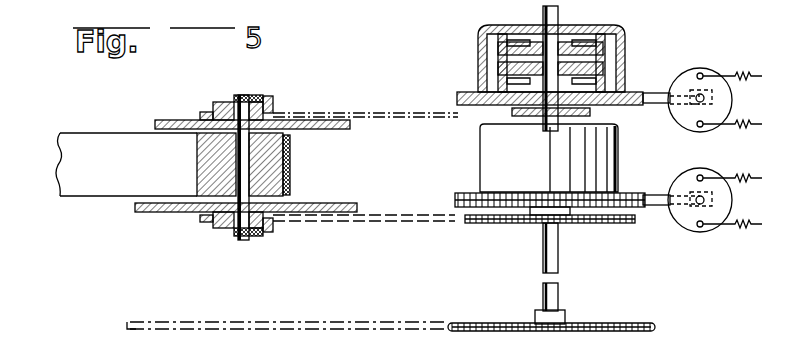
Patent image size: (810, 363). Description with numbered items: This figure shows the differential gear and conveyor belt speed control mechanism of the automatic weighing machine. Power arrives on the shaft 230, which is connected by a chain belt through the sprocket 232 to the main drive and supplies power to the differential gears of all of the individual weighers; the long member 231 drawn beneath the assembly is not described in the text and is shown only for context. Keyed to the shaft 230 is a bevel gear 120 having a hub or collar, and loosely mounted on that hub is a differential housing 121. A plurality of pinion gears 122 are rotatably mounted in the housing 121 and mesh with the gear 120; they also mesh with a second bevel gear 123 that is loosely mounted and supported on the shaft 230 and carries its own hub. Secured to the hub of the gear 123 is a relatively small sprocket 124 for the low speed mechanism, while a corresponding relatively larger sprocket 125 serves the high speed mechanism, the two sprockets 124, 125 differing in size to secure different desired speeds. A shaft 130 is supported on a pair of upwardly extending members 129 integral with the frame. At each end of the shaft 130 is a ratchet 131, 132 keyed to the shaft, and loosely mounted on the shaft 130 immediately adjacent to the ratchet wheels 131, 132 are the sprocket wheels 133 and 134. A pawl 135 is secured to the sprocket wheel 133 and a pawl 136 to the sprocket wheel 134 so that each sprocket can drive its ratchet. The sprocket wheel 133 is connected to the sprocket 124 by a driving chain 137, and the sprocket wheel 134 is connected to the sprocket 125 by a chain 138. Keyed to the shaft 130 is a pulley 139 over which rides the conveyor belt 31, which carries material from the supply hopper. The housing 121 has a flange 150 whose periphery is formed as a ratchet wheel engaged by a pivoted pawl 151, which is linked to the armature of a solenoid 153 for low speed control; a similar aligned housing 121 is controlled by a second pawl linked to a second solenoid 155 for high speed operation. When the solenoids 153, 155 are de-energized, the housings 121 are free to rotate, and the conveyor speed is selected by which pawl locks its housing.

The conveyor belt 31 is at (99, 145).
The bevel gear 120 is at (560, 18).
The differential housing 121 is at (620, 42).
The pinion gears 122 is at (528, 16).
The second bevel gear 123 is at (590, 70).
The sprocket 124 is at (590, 117).
The sprocket 125 is at (624, 223).
The upwardly extending members 129 is at (167, 106).
The shaft 130 is at (238, 146).
The ratchet 131 is at (237, 95).
The ratchet 132 is at (242, 236).
The sprocket wheel 133 is at (211, 109).
The sprocket wheel 134 is at (218, 224).
The pawl 135 is at (266, 96).
The pawl 136 is at (267, 236).
The driving chain 137 is at (360, 89).
The chain 138 is at (455, 208).
The pulley 139 is at (206, 180).
The flange 150 is at (642, 94).
The pawl 151 is at (665, 93).
The solenoid 153 is at (745, 158).
The second solenoid 155 is at (730, 62).
The shaft 230 is at (555, 265).
The base plate 231 is at (312, 337).
The sprocket 232 is at (465, 330).